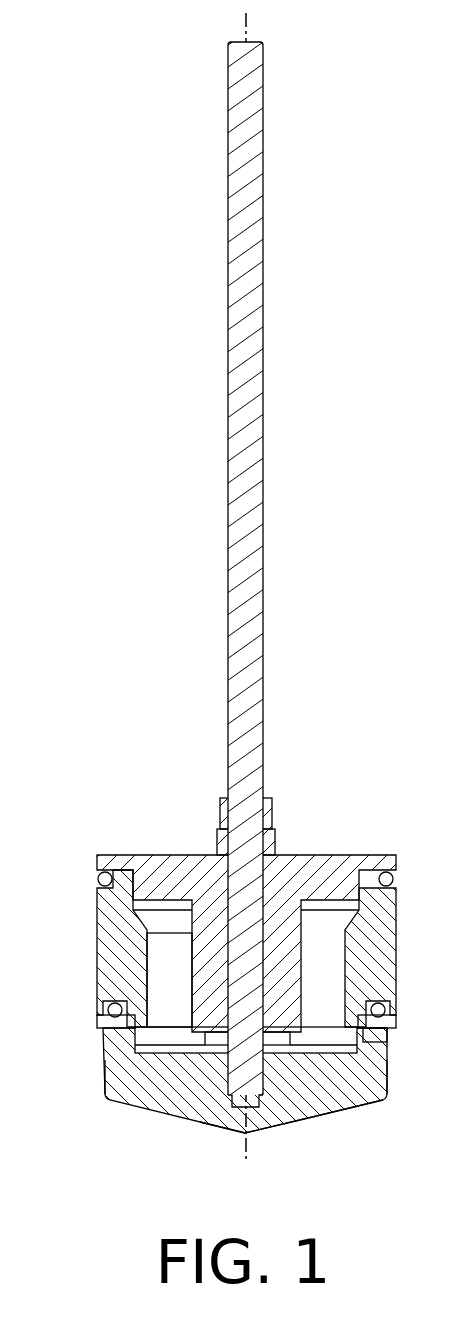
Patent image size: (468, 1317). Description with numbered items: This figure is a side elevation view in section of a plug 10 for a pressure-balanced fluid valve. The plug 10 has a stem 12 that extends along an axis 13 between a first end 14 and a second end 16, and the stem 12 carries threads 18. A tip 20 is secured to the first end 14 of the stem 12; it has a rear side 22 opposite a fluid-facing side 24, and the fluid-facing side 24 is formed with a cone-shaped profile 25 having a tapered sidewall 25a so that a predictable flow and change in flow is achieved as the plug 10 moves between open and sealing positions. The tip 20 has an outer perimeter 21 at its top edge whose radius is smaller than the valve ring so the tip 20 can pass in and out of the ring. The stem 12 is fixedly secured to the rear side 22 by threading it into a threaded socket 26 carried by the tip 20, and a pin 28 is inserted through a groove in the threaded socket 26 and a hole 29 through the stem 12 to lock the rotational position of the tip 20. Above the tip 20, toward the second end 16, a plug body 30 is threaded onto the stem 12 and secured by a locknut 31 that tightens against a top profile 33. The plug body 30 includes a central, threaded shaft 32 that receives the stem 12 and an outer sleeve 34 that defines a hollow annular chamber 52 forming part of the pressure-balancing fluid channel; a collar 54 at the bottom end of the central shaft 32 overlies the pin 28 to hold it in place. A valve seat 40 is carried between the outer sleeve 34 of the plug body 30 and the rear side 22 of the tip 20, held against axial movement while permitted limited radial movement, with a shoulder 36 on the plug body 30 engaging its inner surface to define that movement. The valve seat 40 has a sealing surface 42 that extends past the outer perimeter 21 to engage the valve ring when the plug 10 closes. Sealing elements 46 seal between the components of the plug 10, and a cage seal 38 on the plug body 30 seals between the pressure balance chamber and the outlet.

The plug 10 is at (100, 774).
The stem 12 is at (172, 596).
The axis 13 is at (243, 32).
The first end 14 is at (237, 1088).
The second end 16 is at (229, 138).
The threads 18 is at (229, 87).
The tip 20 is at (241, 1118).
The outer perimeter 21 is at (103, 1045).
The rear side 22 is at (383, 1060).
The fluid-facing side 24 is at (283, 1123).
The cone-shaped profile 25 is at (262, 1133).
The tapered sidewall 25a is at (383, 1078).
The threaded socket 26 is at (230, 1060).
The pin 28 is at (248, 1044).
The hole 29 is at (263, 1048).
The plug body 30 is at (240, 970).
The locknut 31 is at (273, 802).
The central shaft 32 is at (277, 881).
The top profile 33 is at (273, 833).
The outer sleeve 34 is at (240, 932).
The shoulder 36 is at (385, 1038).
The cage seal 38 is at (396, 875).
The valve seat 40 is at (97, 1015).
The sealing surface 42 is at (100, 1040).
The sealing elements 46 is at (100, 872).
The annular chamber 52 is at (145, 965).
The collar 54 is at (297, 1036).